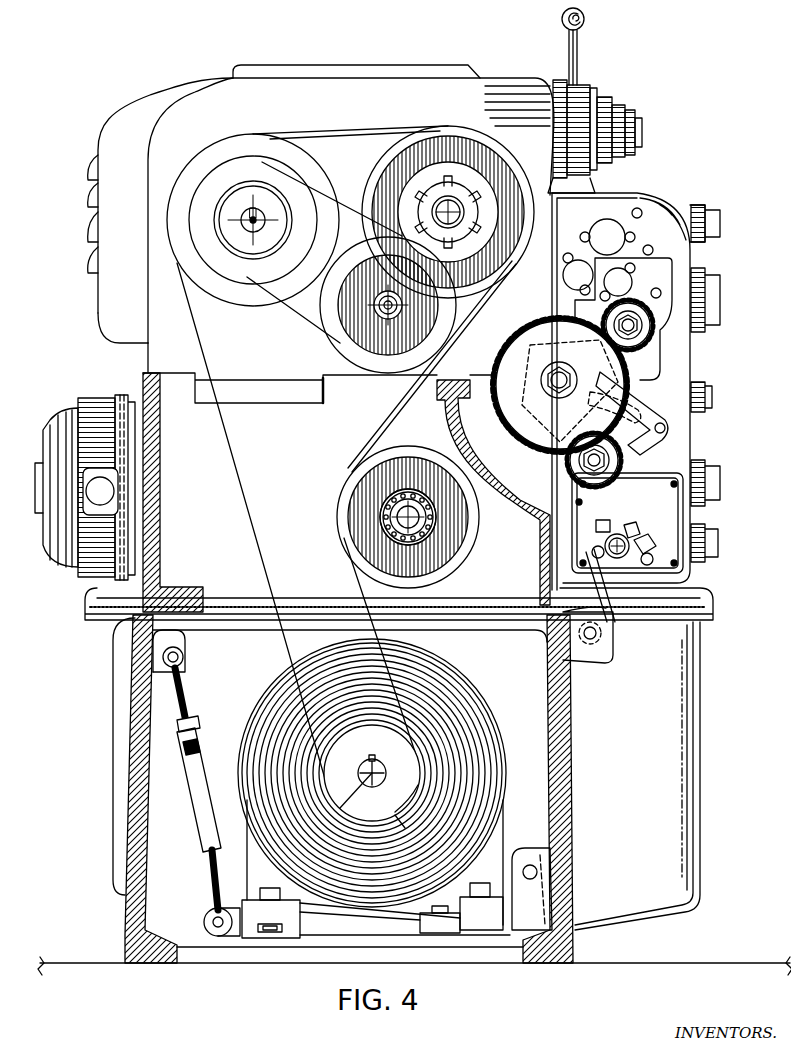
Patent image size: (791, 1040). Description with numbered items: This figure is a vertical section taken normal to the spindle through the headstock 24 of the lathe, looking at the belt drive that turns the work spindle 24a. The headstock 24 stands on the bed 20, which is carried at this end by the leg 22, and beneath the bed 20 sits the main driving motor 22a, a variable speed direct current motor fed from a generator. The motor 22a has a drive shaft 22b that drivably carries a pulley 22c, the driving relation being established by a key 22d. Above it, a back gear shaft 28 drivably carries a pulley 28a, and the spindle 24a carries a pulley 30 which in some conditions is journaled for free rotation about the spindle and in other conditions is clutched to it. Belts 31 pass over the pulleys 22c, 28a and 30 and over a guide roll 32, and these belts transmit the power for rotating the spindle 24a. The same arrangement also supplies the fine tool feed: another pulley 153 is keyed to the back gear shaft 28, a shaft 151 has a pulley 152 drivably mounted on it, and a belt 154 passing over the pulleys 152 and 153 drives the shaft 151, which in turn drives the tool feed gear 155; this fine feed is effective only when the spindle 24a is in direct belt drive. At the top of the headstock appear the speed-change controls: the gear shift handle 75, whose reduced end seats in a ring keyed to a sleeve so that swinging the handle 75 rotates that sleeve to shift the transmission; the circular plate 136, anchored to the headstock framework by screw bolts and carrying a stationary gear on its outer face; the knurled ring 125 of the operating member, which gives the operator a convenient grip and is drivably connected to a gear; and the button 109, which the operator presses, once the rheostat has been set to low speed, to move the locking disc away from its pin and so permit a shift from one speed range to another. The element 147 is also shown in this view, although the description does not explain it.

The bed 20 is at (298, 478).
The leg 22 is at (566, 731).
The main driving motor 22a is at (262, 722).
The drive shaft 22b is at (345, 808).
The pulley 22c is at (398, 816).
The key 22d is at (372, 757).
The headstock 24 is at (346, 80).
The spindle 24a is at (455, 205).
The back gear shaft 28 is at (235, 198).
The pulley 28a is at (248, 140).
The pulley 30 is at (516, 258).
The belts 31 is at (248, 515).
The guide roll 32 is at (440, 556).
The gear shift handle 75 is at (585, 21).
The button 109 is at (642, 130).
The knurled ring 125 is at (633, 156).
The circular plate 136 is at (556, 80).
The gear drum 147 is at (592, 92).
The shaft 151 is at (389, 319).
The pulley 152 is at (342, 352).
The pulley 153 is at (292, 186).
The belt 154 is at (300, 318).
The tool feed gear 155 is at (648, 345).